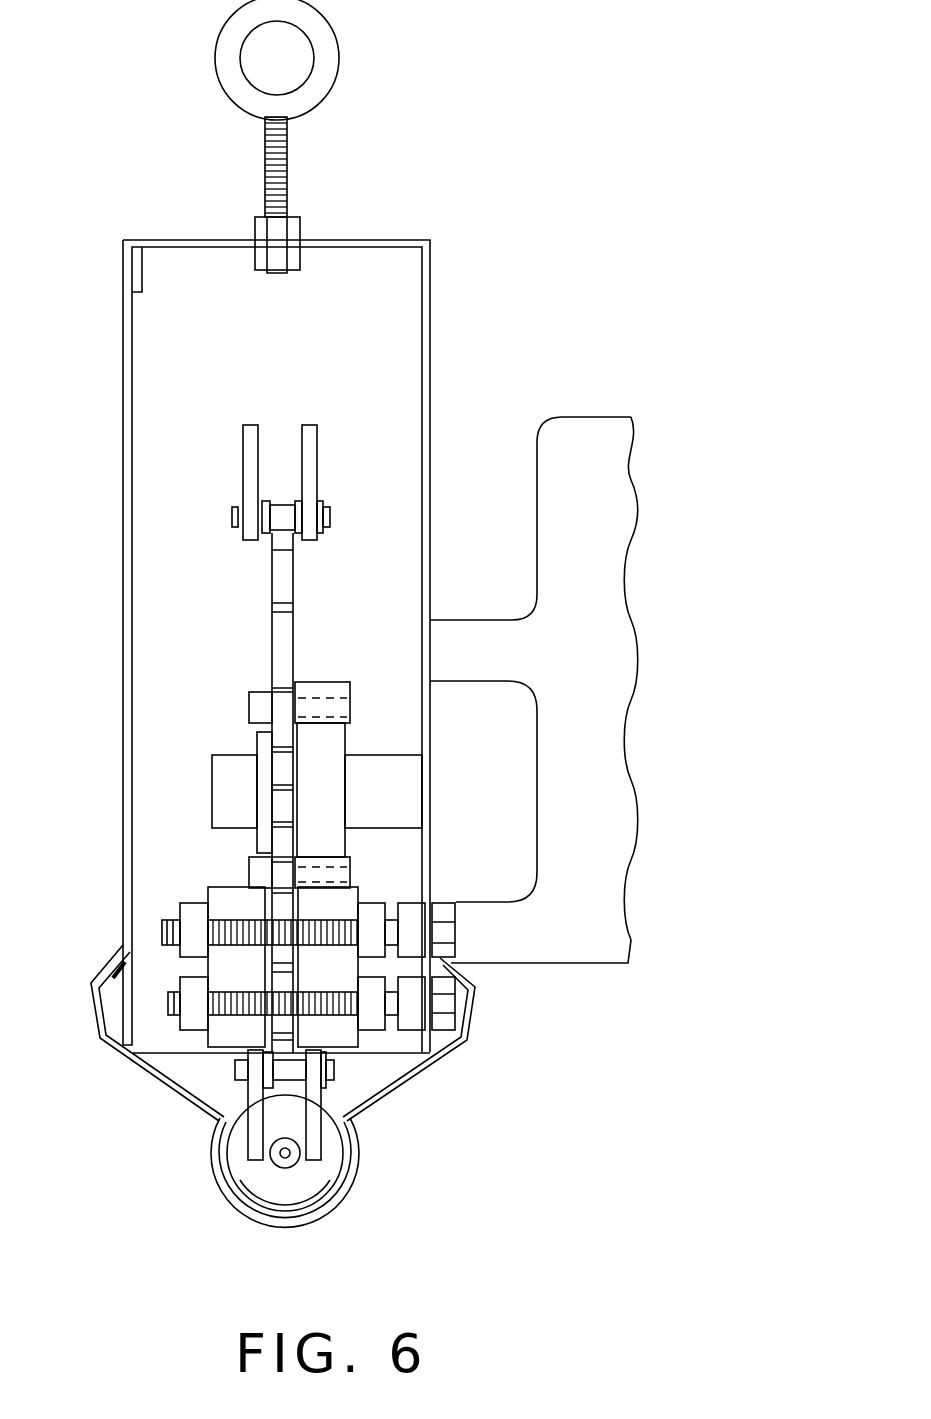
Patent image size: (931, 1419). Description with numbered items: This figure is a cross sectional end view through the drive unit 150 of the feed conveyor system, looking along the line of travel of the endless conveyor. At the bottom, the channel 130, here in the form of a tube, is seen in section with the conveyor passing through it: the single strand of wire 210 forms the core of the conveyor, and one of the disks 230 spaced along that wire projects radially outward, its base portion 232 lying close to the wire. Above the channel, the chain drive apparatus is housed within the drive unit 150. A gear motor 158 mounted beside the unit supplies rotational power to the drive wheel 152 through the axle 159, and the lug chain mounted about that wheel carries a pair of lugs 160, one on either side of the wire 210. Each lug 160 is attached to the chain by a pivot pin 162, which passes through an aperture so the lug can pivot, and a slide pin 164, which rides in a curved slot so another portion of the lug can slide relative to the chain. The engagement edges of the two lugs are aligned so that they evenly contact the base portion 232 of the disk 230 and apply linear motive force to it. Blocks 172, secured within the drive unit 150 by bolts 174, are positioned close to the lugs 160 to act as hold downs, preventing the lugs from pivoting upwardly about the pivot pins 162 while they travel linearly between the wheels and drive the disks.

The drive unit 150 is at (407, 213).
The gear motor 158 is at (577, 448).
The lug 160 is at (242, 440).
The slide pin 164 is at (330, 517).
The drive wheel 152 is at (304, 624).
The axle 159 is at (402, 791).
The bolts 174 is at (158, 927).
The blocks 172 is at (200, 1037).
The pivot pin 162 is at (333, 1070).
The channel or transport tube 130 is at (353, 1183).
The disks 230 is at (270, 1203).
The base portion 232 is at (303, 1164).
The wire 210 is at (273, 1160).